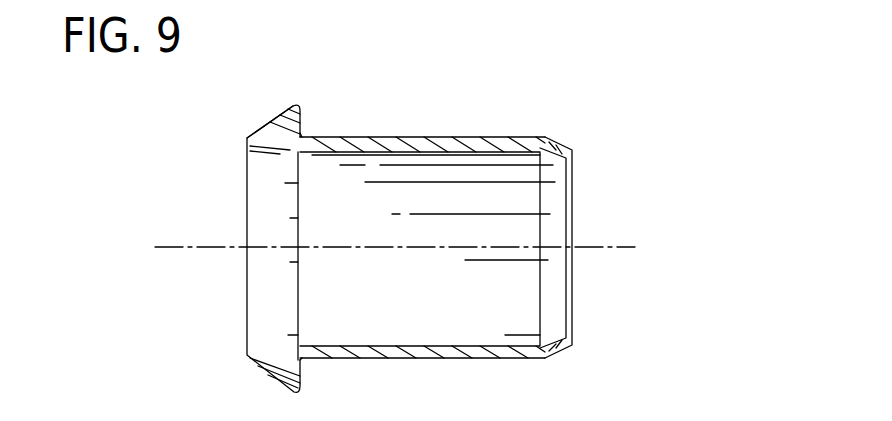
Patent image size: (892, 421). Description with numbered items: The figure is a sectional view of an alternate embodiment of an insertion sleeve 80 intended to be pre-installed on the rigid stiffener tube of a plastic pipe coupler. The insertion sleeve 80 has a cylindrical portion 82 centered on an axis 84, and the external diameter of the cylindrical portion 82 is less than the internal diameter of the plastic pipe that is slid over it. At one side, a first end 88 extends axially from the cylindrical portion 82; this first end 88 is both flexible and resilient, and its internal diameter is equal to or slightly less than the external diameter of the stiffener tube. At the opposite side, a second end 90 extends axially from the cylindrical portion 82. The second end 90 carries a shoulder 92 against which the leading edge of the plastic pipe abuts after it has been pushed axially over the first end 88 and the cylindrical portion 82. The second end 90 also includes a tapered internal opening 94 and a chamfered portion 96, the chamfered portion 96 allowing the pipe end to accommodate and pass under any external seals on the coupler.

The insertion sleeve 80 is at (642, 181).
The cylindrical portion 82 is at (437, 130).
The axis 84 is at (192, 250).
The first end 88 is at (568, 146).
The second end 90 is at (294, 104).
The shoulder 92 is at (303, 134).
The tapered internal opening 94 is at (276, 150).
The chamfered portion 96 is at (273, 120).